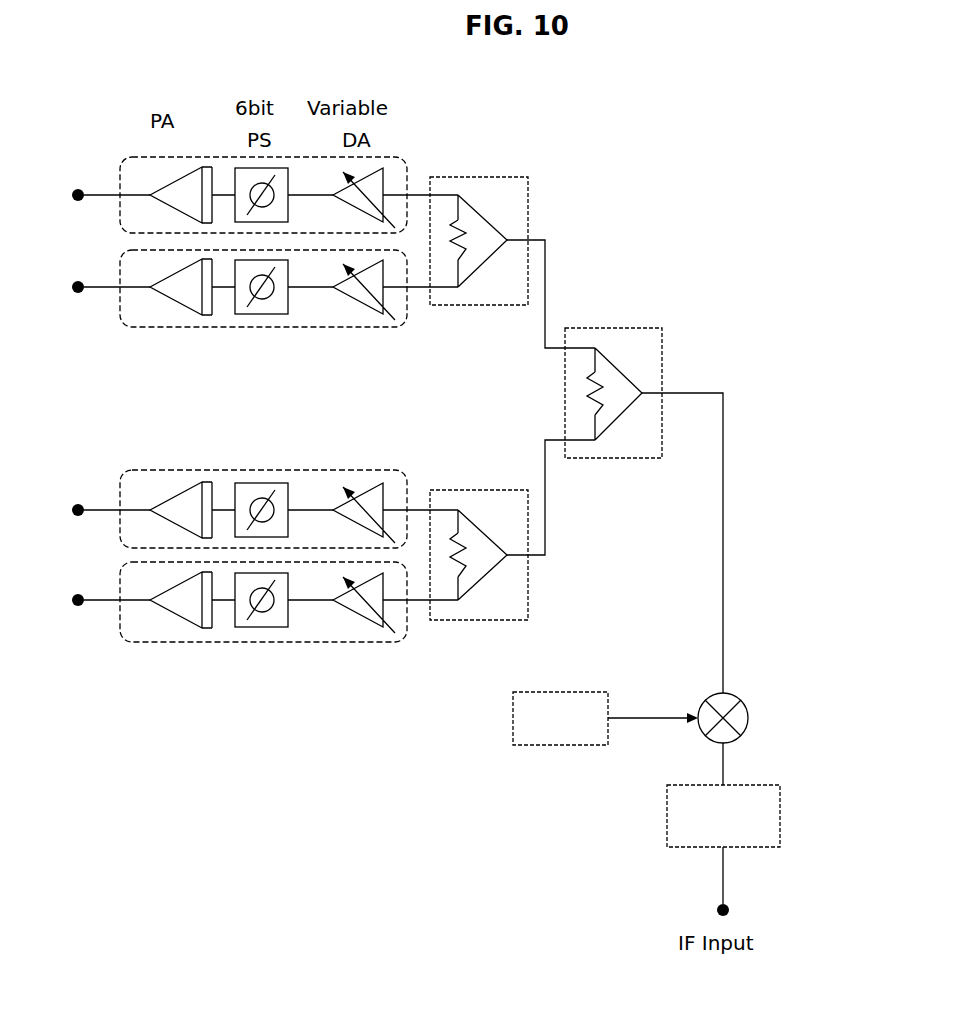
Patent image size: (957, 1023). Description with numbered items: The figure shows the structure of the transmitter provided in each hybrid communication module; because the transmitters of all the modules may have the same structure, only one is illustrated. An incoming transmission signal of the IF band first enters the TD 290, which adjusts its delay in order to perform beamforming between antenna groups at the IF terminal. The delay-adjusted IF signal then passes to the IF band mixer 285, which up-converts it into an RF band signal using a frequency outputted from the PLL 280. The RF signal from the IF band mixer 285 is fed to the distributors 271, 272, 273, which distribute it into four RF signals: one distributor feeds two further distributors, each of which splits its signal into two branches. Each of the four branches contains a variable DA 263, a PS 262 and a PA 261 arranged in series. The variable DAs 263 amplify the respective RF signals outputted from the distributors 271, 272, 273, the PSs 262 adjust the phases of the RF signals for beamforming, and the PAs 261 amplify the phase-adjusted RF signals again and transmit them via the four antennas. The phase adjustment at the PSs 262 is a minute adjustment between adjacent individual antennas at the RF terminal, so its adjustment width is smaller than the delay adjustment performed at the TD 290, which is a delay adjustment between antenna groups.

The power amplifier 261 is at (177, 178).
The PS 262 is at (238, 167).
The variable DA 263 is at (388, 166).
The distributor 271 is at (500, 177).
The distributor 272 is at (528, 583).
The distributor 273 is at (612, 328).
The PLL 280 is at (563, 692).
The IF band mixer 285 is at (738, 697).
The TD 290 is at (780, 815).